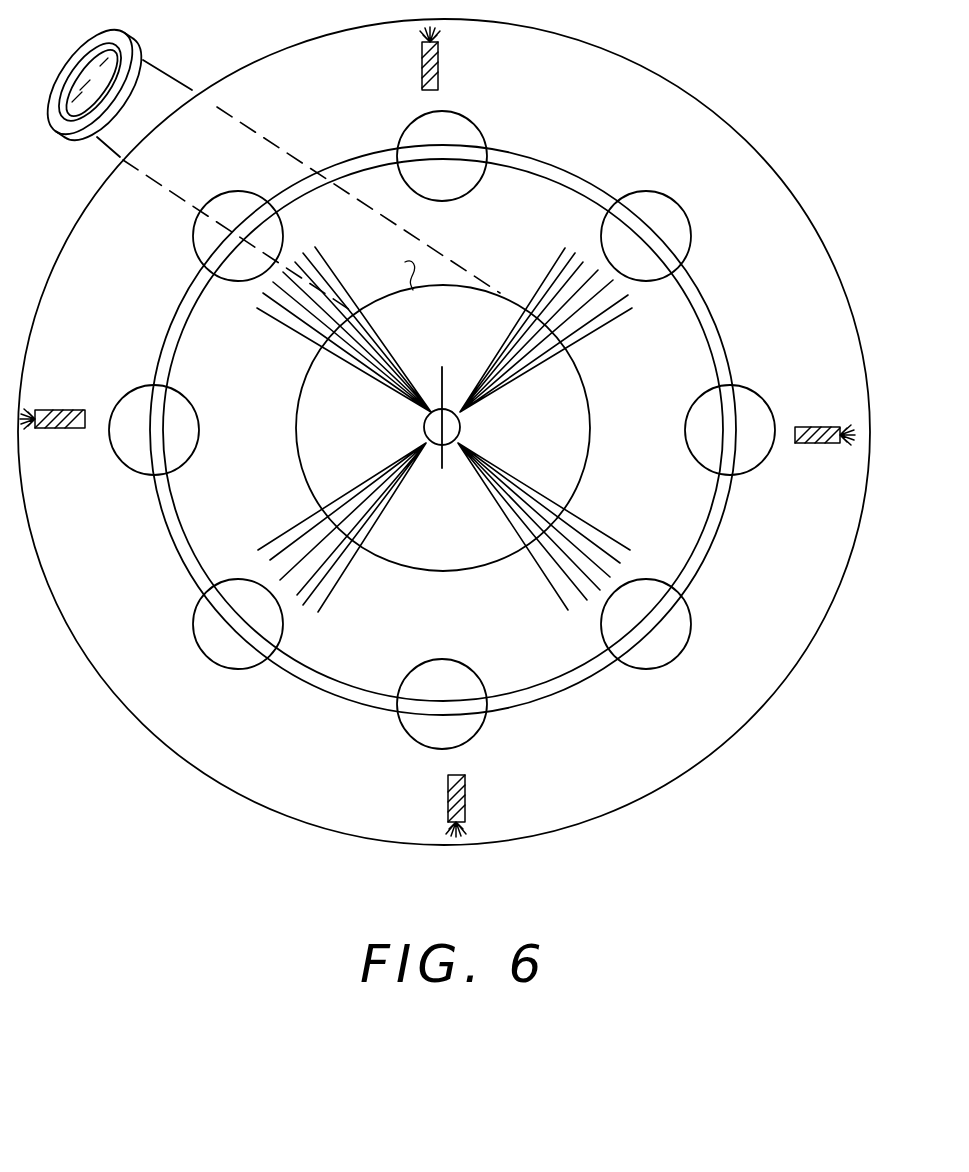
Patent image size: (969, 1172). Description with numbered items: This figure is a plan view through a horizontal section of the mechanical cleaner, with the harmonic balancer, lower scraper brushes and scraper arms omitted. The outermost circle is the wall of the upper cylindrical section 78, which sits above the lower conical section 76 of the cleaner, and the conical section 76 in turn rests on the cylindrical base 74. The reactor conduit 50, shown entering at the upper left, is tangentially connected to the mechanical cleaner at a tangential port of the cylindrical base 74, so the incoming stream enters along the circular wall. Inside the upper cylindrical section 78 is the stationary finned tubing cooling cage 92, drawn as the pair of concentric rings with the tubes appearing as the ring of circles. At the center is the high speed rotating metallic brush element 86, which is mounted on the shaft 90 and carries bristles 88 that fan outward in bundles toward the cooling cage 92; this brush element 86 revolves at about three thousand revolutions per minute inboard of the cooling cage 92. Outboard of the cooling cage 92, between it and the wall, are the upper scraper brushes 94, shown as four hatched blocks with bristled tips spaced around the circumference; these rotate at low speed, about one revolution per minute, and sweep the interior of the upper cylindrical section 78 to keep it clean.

The reactor conduit 50 is at (153, 90).
The cylindrical base 74 is at (588, 425).
The lower conical section 76 is at (645, 477).
The upper cylindrical section 78 is at (822, 250).
The brush element 86 is at (470, 421).
The bristles 88 is at (566, 325).
The shaft 90 is at (432, 428).
The finned cooling cage 92 is at (575, 688).
The upper scraper brushes 94 is at (65, 410).